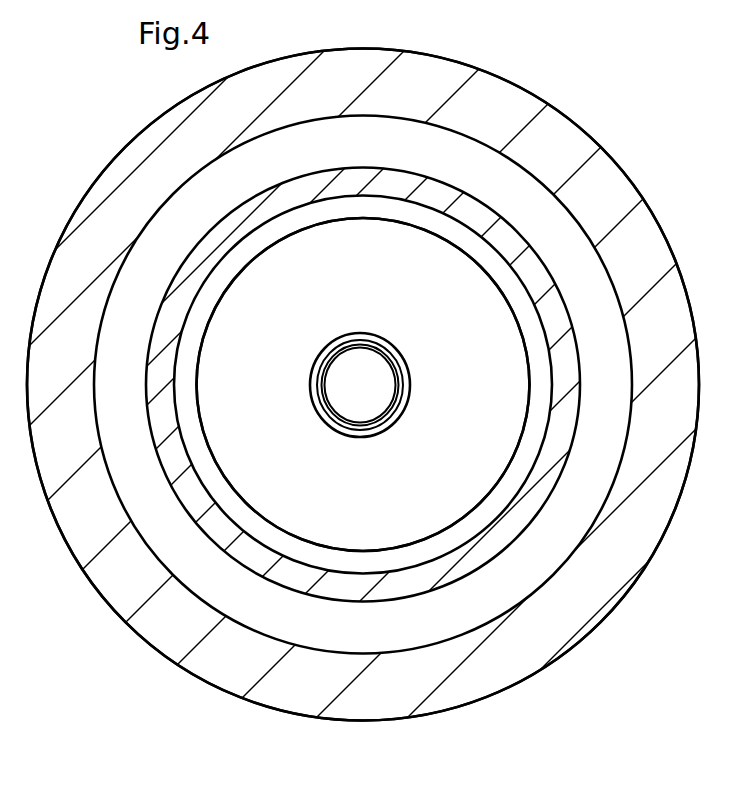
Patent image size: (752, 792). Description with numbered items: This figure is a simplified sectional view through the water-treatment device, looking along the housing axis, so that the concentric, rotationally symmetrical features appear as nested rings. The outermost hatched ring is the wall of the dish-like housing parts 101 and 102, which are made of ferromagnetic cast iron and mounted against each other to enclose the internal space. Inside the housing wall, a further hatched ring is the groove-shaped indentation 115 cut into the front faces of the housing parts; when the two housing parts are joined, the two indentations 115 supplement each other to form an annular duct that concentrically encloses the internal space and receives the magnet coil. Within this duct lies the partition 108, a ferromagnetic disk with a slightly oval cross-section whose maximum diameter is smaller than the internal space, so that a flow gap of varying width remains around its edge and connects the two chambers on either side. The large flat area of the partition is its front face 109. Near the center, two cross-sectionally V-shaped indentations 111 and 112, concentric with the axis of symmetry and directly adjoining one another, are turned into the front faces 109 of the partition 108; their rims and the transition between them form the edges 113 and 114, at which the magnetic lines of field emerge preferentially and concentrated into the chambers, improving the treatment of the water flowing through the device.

The housing part 101 is at (450, 52).
The housing part 102 is at (363, 364).
The partition 108 is at (270, 497).
The front face of partition 109 is at (373, 292).
The V-shaped indentation 111 is at (397, 350).
The V-shaped indentation 112 is at (395, 372).
The edge 113 is at (408, 388).
The edge 114 is at (403, 402).
The groove-shaped indentation 115 is at (543, 225).